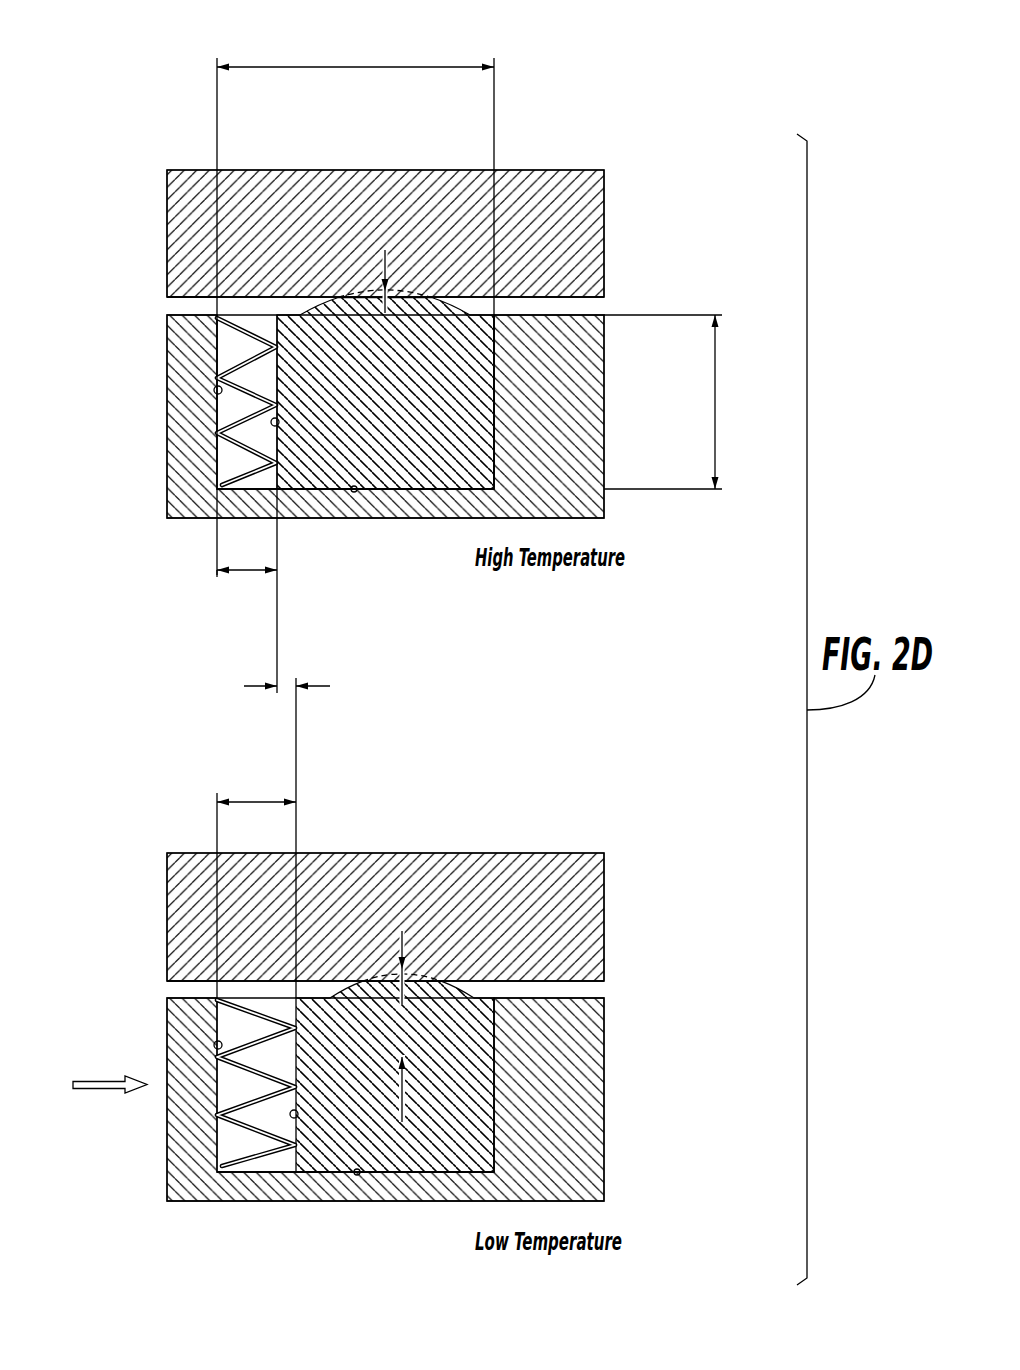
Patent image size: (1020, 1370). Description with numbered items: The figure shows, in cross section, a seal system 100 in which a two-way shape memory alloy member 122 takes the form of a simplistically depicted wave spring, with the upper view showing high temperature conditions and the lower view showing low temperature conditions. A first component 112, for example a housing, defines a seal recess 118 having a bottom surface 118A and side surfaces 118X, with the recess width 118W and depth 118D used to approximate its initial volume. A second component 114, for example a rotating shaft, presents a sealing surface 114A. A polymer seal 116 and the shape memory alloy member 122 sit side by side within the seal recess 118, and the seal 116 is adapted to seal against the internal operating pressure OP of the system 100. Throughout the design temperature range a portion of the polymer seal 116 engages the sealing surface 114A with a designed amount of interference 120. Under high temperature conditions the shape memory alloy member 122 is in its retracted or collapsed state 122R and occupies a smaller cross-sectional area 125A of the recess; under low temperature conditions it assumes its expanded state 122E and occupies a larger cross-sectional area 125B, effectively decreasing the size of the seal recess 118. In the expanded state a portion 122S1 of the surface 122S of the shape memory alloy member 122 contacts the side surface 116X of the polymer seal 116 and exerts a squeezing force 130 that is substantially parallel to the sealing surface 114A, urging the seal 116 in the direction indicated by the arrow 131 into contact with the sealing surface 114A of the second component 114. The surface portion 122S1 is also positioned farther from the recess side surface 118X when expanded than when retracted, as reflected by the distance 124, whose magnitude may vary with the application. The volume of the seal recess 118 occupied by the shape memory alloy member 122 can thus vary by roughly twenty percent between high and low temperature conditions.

The system 100 is at (145, 191).
The first component 112 is at (600, 410).
The second component 114 is at (595, 205).
The sealing surface 114A is at (542, 300).
The polymer seal 116 is at (468, 366).
The side surface of the polymer seal 116X is at (280, 422).
The seal recess 118 is at (402, 491).
The bottom surface of the seal recess 118A is at (354, 492).
The width of the seal recess 118W is at (328, 65).
The depth of the seal recess 118D is at (720, 429).
The side surface of the seal recess 118X is at (214, 389).
The interference 120 is at (385, 255).
The two-way shape memory alloy member 122 is at (240, 398).
The retracted or collapsed state 122R is at (270, 349).
The expanded state 122E is at (247, 1015).
The surface of the TWSMA member 122S is at (212, 483).
The portion of the surface of the TWSMA member 122S1 is at (294, 1086).
The distance 124 is at (285, 684).
The smaller cross-sectional area 125A is at (248, 572).
The larger cross-sectional area 125B is at (258, 800).
The force 130 is at (88, 1090).
The arrow 131 is at (412, 1096).
The operating pressure OP is at (208, 309).